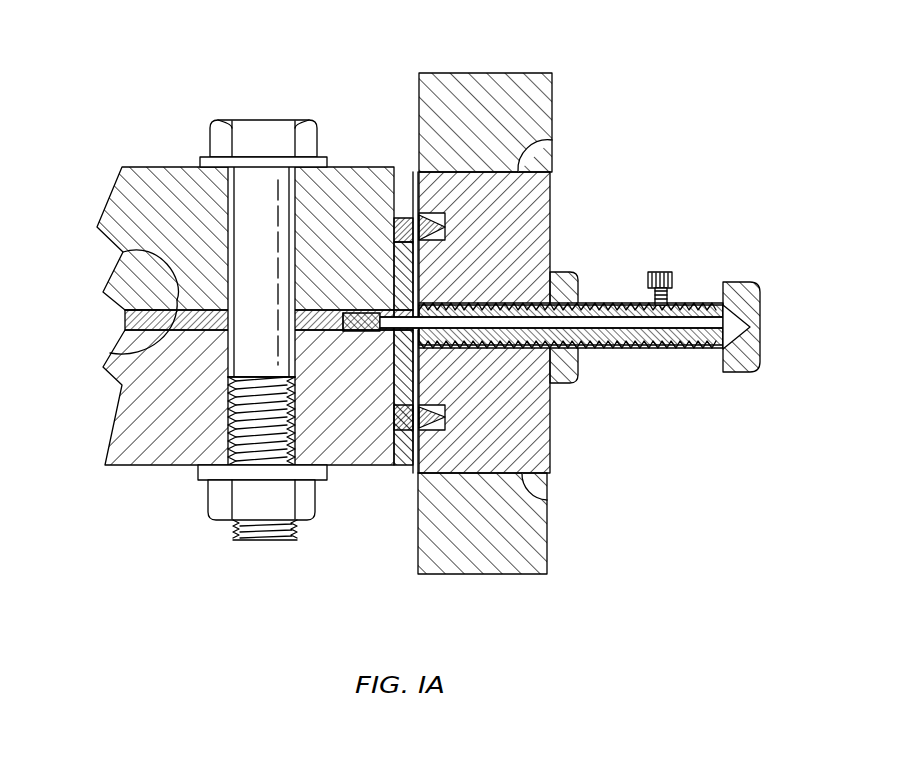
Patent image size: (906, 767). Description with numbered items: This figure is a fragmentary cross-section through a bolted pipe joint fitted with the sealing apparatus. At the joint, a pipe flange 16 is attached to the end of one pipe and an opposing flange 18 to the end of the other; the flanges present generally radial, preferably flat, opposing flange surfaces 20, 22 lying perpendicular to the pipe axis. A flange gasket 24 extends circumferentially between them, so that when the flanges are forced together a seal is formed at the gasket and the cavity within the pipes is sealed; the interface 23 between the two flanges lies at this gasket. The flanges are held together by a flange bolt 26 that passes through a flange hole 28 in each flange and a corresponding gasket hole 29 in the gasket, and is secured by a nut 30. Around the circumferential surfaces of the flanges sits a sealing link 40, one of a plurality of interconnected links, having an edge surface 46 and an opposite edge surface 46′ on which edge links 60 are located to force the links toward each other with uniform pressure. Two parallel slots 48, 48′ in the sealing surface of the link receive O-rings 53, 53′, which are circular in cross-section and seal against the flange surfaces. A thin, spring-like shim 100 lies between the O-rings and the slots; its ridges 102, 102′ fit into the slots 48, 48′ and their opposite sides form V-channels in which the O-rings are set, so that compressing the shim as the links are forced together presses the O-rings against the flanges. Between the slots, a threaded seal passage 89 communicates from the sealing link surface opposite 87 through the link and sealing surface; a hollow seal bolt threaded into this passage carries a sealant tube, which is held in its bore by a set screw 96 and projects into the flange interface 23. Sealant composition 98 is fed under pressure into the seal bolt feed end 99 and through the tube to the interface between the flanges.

The pipe flange 16 is at (132, 202).
The opposing flange 18 is at (117, 433).
The flange surface 20 is at (123, 252).
The opposing flange surface 22 is at (110, 353).
The interface 23 is at (130, 320).
The flange gasket 24 is at (128, 315).
The flange bolt 26 is at (263, 133).
The flange hole 28 is at (293, 213).
The gasket hole 29 is at (368, 392).
The nut 30 is at (222, 498).
The sealing link 40 is at (558, 256).
The edge surface 46 is at (518, 170).
The opposite edge surface 46′ is at (522, 476).
The slot 48 is at (437, 207).
The slot 48′ is at (419, 408).
The O-ring 53 is at (400, 222).
The O-ring 53′ is at (412, 433).
The edge link 60 is at (556, 97).
The sealing link surface opposite 87 is at (550, 455).
The seal passage 89 is at (590, 335).
The set screw 96 is at (660, 272).
The sealant composition 98 is at (394, 400).
The seal bolt feed end 99 is at (750, 331).
The shim 100 is at (413, 470).
The ridge 102 is at (445, 240).
The ridge 102′ is at (445, 430).